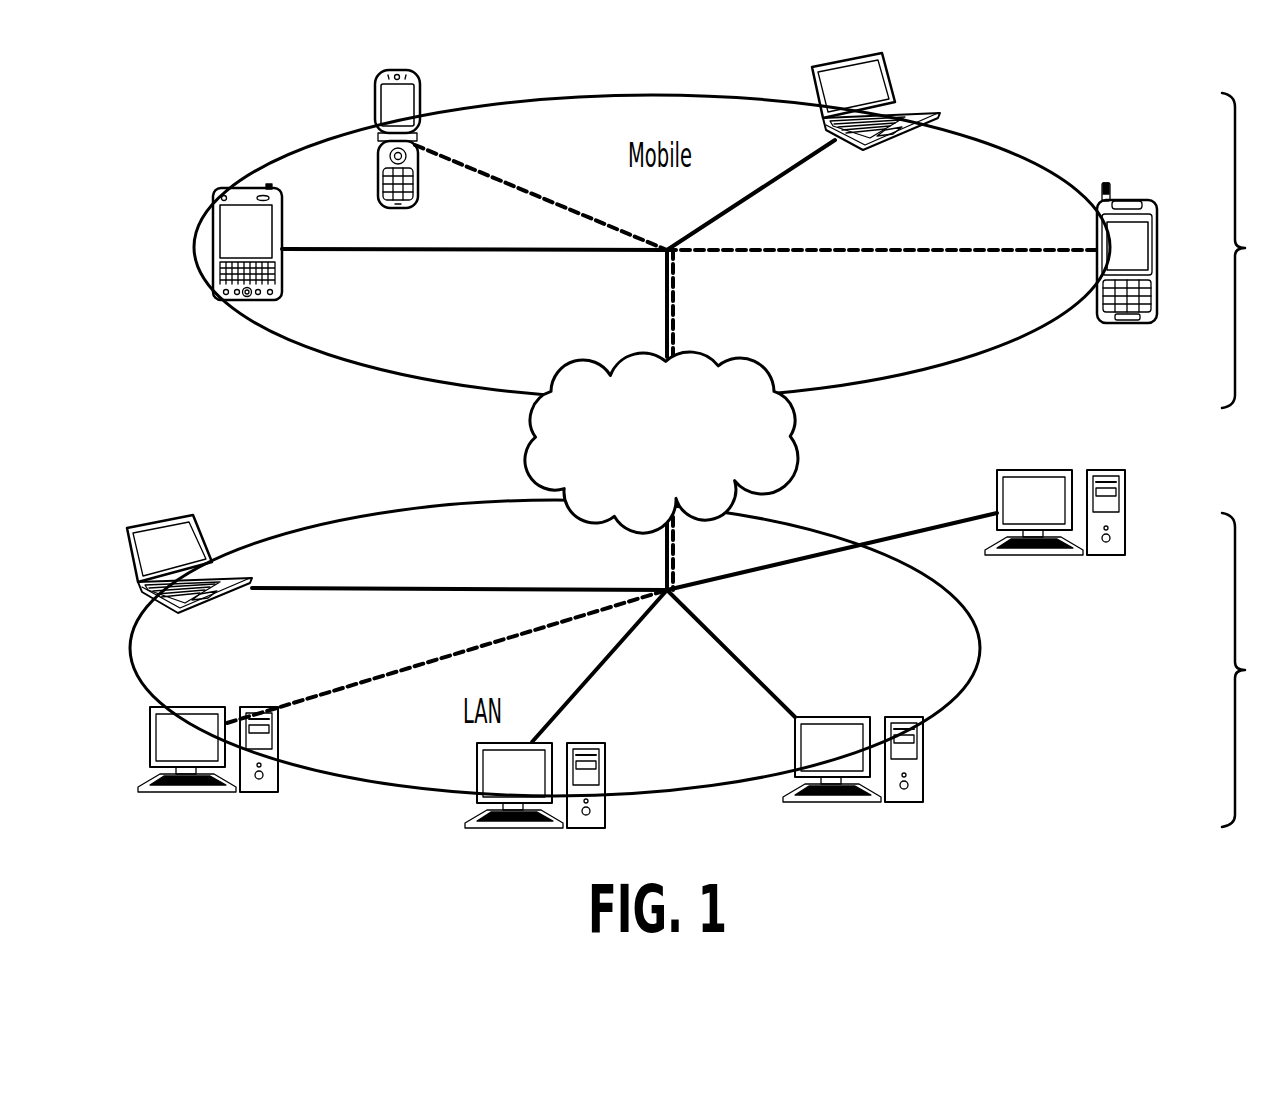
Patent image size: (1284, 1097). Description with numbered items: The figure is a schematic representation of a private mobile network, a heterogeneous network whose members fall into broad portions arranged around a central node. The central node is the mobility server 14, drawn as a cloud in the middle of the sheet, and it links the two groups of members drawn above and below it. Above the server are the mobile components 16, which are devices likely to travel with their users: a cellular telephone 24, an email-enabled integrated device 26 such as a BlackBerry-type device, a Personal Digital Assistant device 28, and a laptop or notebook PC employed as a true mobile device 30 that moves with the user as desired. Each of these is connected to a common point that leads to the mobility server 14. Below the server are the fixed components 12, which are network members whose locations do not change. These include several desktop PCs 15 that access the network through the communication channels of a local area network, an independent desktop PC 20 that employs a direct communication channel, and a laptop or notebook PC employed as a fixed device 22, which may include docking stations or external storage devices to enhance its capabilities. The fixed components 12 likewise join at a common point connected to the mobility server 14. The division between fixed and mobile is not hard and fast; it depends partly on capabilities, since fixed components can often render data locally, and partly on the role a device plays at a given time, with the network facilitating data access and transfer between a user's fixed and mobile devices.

The fixed components 12 is at (1245, 670).
The mobility server 14 is at (802, 457).
The desktop PC 15 is at (259, 790).
The mobile components 16 is at (1245, 248).
The independent desktop PC 20 is at (1125, 502).
The laptop or notebook PC employed as fixed device 22 is at (203, 547).
The cellular telephone 24 is at (377, 100).
The email-enabled integrated device 26 is at (213, 240).
The Personal Digital Assistant device 28 is at (1157, 228).
The laptop or notebook PC employed as true mobile device 30 is at (917, 108).